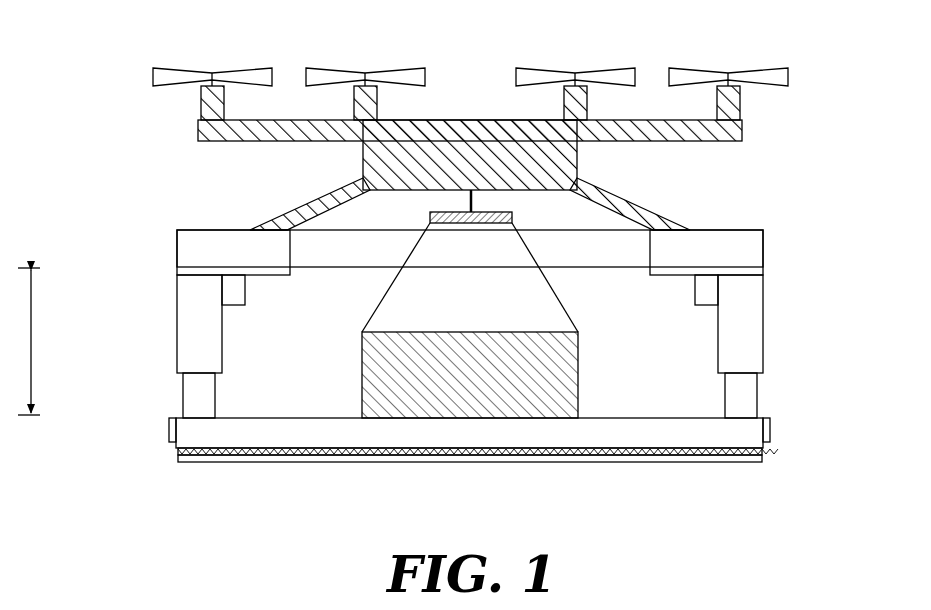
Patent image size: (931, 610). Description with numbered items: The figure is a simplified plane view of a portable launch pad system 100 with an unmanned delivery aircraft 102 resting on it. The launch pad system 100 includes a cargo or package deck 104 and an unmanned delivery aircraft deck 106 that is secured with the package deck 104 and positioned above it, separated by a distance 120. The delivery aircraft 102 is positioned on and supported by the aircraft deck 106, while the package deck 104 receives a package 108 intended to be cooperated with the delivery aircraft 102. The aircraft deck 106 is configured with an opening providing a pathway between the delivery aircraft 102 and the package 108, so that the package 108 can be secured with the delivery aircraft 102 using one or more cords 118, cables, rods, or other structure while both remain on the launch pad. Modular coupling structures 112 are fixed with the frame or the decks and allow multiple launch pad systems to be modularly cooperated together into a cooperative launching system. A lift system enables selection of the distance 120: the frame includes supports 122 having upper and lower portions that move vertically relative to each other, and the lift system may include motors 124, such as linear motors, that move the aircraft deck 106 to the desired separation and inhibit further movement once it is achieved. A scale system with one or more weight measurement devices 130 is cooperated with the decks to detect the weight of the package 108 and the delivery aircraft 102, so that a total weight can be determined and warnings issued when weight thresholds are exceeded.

The portable launch pad system 100 is at (110, 191).
The unmanned delivery aircraft 102 is at (462, 127).
The package deck 104 is at (663, 422).
The aircraft deck 106 is at (623, 252).
The package 108 is at (377, 373).
The modular coupling structure 112 is at (169, 432).
The cord 118 is at (380, 305).
The distance 120 is at (37, 341).
The support 122 is at (190, 332).
The motor 124 is at (233, 290).
The weight measurement device 130 is at (227, 450).